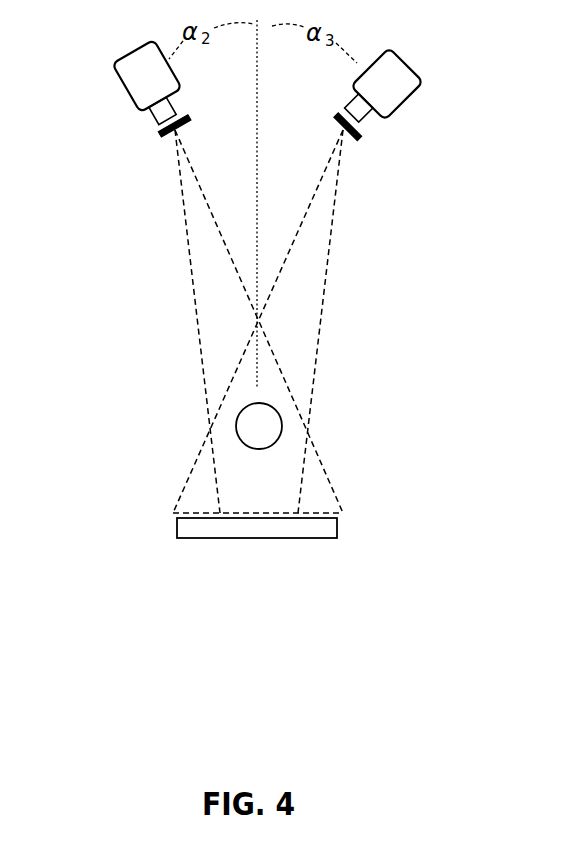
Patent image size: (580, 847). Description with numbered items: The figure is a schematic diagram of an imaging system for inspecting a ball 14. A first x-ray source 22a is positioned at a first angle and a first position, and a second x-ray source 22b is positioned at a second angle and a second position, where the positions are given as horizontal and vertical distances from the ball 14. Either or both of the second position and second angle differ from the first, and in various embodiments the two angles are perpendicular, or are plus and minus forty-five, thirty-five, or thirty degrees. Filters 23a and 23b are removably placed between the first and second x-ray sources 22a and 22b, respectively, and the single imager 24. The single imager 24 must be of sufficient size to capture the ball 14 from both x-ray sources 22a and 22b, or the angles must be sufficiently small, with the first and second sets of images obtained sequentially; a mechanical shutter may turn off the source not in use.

The first x-ray source 22a is at (114, 83).
The filter 23a is at (154, 135).
The second x-ray source 22b is at (422, 70).
The filter 23b is at (360, 132).
The ball 14 is at (229, 423).
The single imager 24 is at (227, 541).